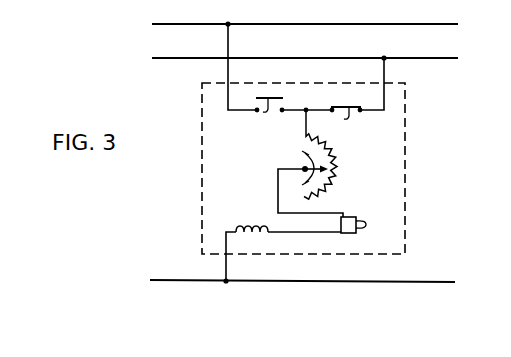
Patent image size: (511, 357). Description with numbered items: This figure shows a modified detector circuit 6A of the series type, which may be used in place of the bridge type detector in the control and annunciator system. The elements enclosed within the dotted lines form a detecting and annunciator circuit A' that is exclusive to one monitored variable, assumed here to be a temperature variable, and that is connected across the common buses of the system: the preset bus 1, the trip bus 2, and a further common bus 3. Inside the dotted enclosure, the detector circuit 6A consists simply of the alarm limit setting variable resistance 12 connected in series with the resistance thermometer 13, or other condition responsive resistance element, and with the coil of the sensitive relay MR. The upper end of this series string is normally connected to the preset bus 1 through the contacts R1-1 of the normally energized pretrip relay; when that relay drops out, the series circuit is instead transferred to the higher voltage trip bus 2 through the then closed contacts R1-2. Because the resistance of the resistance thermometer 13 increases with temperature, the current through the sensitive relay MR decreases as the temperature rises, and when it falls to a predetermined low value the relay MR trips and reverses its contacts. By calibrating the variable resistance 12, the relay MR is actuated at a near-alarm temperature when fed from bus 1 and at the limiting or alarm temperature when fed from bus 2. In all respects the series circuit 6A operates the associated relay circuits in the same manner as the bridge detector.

The preset bus 1 is at (195, 25).
The trip bus 2 is at (437, 59).
The common bus 3 is at (186, 279).
The detecting and annunciator circuit A' is at (320, 168).
The contacts of pretrip relay R1 R1-1 is at (262, 115).
The contacts of pretrip relay R1 R1-2 is at (344, 120).
The modified detector circuit 6A is at (341, 165).
The alarm limit setting variable resistance 12 is at (287, 157).
The resistance thermometer 13 is at (356, 219).
The sensitive relay MR is at (282, 249).